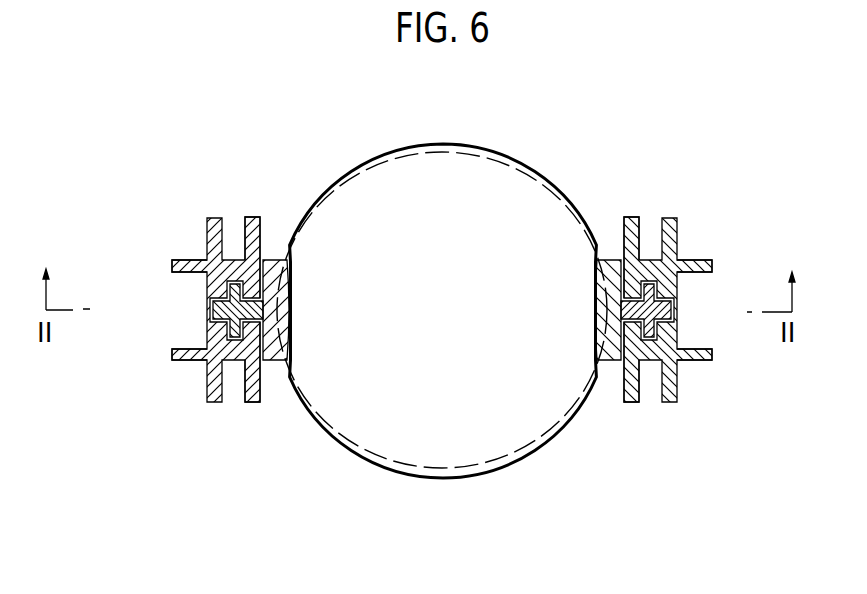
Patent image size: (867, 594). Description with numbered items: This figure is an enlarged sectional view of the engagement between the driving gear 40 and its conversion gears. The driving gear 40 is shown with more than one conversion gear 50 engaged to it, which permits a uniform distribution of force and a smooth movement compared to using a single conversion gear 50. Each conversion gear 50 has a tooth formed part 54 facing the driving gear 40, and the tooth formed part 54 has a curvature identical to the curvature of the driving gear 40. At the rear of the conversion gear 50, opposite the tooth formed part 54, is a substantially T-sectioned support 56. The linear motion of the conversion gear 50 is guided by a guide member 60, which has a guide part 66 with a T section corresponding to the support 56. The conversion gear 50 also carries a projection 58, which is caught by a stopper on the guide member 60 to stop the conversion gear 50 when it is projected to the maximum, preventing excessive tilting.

The driving gear 40 is at (515, 212).
The conversion gear 50 is at (275, 364).
The tooth formed part 54 is at (606, 262).
The support 56 is at (237, 360).
The projection 58 is at (205, 312).
The guide member 60 is at (208, 405).
The guide part 66 is at (240, 262).